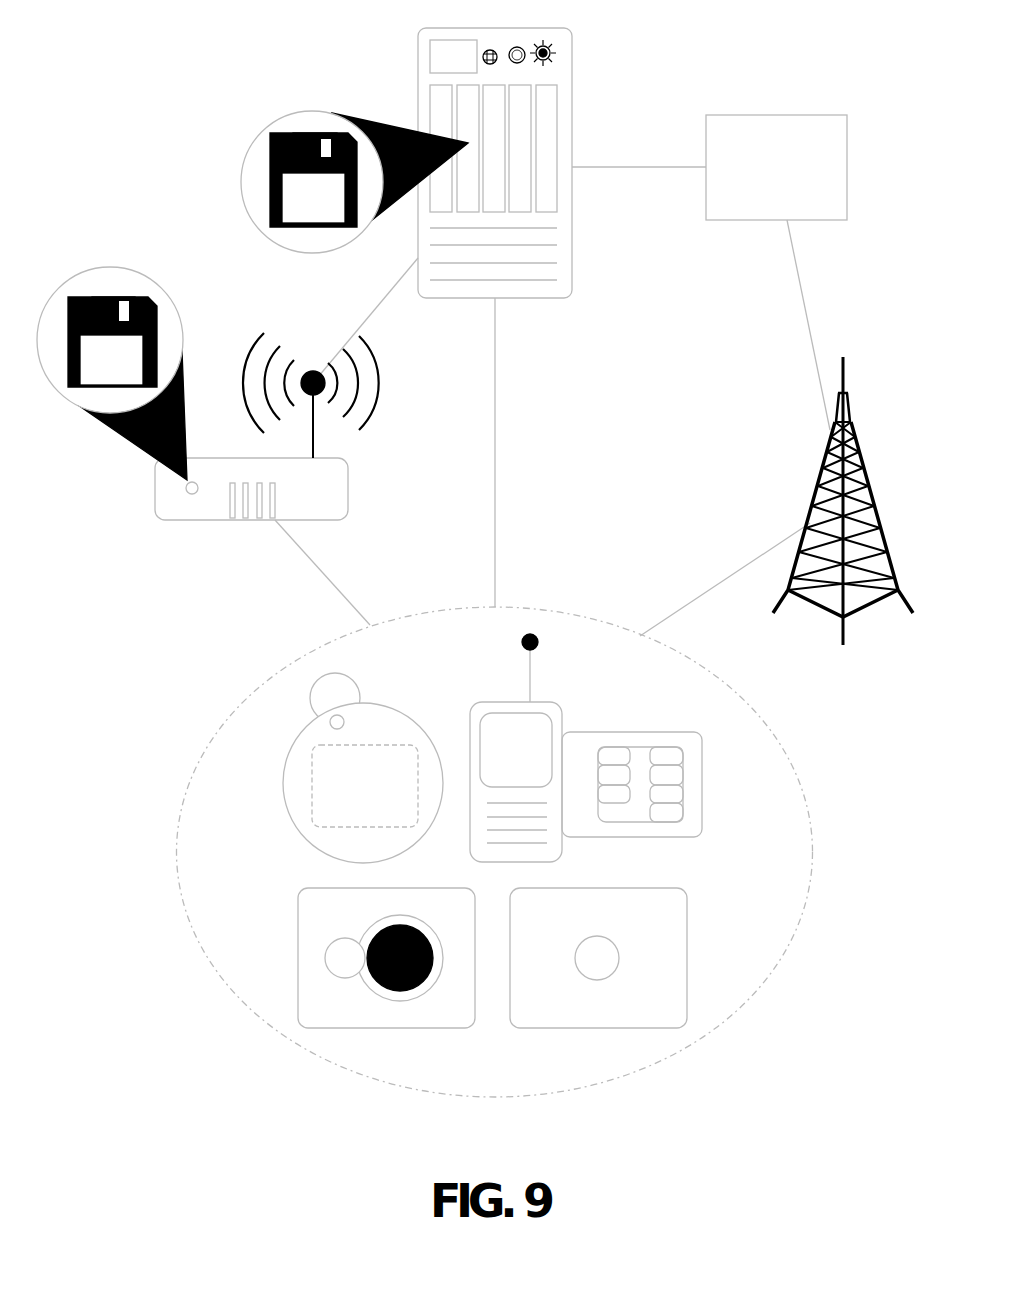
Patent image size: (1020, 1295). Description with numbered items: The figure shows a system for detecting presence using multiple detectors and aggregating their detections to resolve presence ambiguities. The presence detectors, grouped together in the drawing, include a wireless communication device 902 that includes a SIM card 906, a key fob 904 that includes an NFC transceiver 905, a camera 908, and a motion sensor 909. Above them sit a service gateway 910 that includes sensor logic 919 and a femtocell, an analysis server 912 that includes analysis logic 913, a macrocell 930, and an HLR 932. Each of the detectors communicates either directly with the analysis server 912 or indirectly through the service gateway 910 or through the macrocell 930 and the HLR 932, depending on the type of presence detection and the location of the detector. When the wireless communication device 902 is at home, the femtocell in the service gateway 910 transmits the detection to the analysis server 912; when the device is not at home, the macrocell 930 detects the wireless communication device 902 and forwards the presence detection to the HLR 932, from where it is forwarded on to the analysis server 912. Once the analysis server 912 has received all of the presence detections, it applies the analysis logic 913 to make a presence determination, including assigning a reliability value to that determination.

The wireless communication device 902 is at (498, 693).
The key fob 904 is at (302, 838).
The NFC transceiver 905 is at (313, 782).
The SIM card 906 is at (592, 730).
The camera 908 is at (387, 1028).
The motion sensor 909 is at (678, 880).
The service gateway 910 is at (195, 518).
The analysis server 912 is at (572, 112).
The analysis logic 913 is at (288, 133).
The sensor logic 919 is at (155, 312).
The macrocell 930 is at (818, 493).
The HLR 932 is at (758, 220).